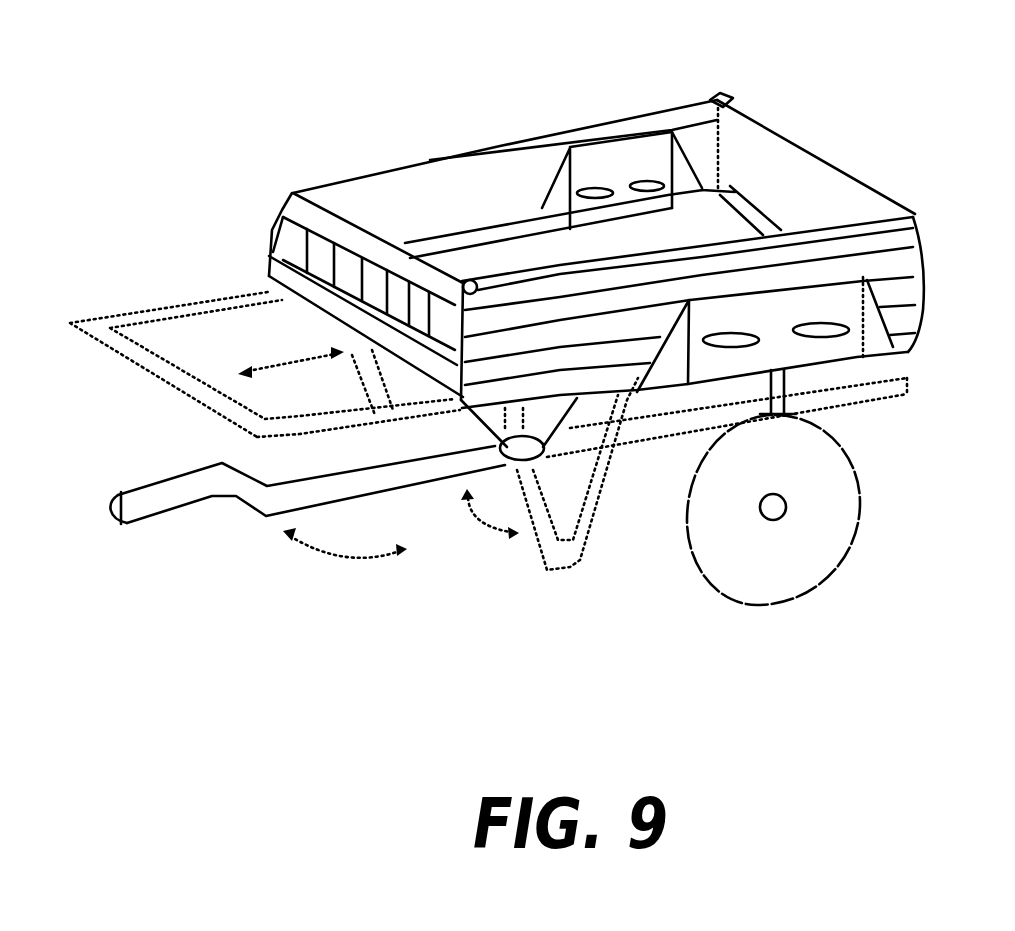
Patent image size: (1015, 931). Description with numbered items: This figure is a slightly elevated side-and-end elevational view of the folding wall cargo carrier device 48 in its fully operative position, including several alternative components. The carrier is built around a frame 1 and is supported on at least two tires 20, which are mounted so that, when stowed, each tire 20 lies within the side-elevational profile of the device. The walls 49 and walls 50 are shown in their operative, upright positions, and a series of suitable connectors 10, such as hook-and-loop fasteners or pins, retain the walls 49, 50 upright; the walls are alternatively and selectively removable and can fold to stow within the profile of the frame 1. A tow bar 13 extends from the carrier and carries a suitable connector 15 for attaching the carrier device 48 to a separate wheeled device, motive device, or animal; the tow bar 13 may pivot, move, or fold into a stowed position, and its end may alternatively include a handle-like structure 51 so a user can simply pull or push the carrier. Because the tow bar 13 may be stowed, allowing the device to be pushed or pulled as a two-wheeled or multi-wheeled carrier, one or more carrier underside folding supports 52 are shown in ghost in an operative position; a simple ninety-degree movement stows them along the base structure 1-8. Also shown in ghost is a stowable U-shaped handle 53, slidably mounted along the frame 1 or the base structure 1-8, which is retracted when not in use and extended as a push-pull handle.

The frame 1 is at (263, 277).
The connectors 10 is at (303, 193).
The tow bar 13 is at (237, 493).
The connector 15 is at (160, 496).
The tires 20 is at (848, 537).
The cargo carrier device 48 is at (413, 163).
The walls 49 is at (503, 170).
The walls 50 is at (277, 222).
The handle-like structure 51 is at (127, 503).
The carrier underside folding supports 52 is at (547, 572).
The stowable U-shaped handle 53 is at (72, 322).
The cargo system components 1 through 8 1-8 is at (720, 208).